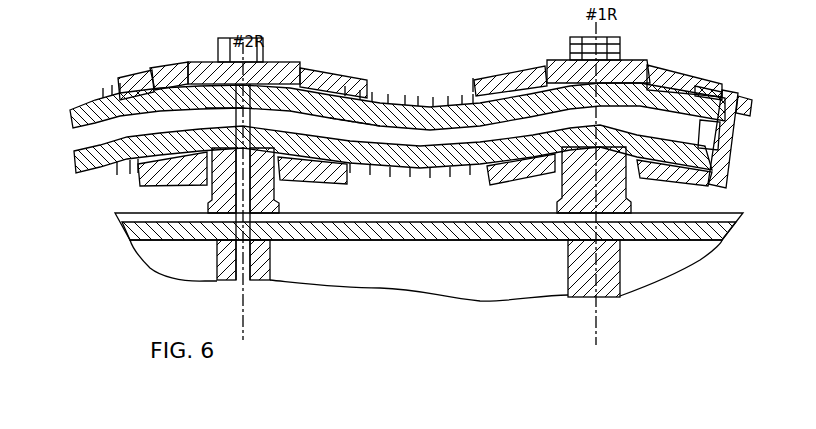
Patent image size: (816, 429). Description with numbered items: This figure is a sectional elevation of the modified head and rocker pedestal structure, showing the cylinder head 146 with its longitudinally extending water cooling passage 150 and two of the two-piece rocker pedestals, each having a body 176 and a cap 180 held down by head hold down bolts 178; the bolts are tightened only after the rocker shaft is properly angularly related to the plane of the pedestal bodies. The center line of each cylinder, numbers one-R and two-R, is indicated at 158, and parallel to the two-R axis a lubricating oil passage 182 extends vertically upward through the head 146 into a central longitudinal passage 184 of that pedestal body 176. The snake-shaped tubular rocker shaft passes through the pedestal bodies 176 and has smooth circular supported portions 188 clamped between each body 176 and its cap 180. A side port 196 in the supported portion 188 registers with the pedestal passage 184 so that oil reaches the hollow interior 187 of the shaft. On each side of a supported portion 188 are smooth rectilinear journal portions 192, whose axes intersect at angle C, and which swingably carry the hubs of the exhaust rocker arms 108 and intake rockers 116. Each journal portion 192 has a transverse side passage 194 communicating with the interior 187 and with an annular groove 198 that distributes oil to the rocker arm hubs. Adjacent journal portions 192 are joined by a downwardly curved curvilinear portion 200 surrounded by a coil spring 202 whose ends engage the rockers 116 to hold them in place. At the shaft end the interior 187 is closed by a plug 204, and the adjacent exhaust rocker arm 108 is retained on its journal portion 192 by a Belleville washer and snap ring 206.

The exhaust rocker arm 108 is at (121, 80).
The intake rocker 116 is at (347, 90).
The head 146 is at (700, 232).
The water cooling passage 150 is at (500, 258).
The cylinder center line 158 is at (243, 298).
The rocker pedestal body 176 is at (270, 184).
The head hold down bolt 178 is at (618, 42).
The cap 180 is at (268, 70).
The lubricating oil passage 182 is at (240, 258).
The central longitudinal passage 184 is at (235, 178).
The hollow interior 187 is at (437, 138).
The supported portion 188 is at (212, 62).
The journal portion 192 is at (130, 78).
The transverse side passage 194 is at (160, 110).
The side port 196 is at (245, 110).
The annular groove 198 is at (157, 80).
The curvilinear portion 200 is at (90, 168).
The coil spring 202 is at (376, 101).
The plug 204 is at (744, 116).
The Belleville washer and snap ring 206 is at (740, 84).